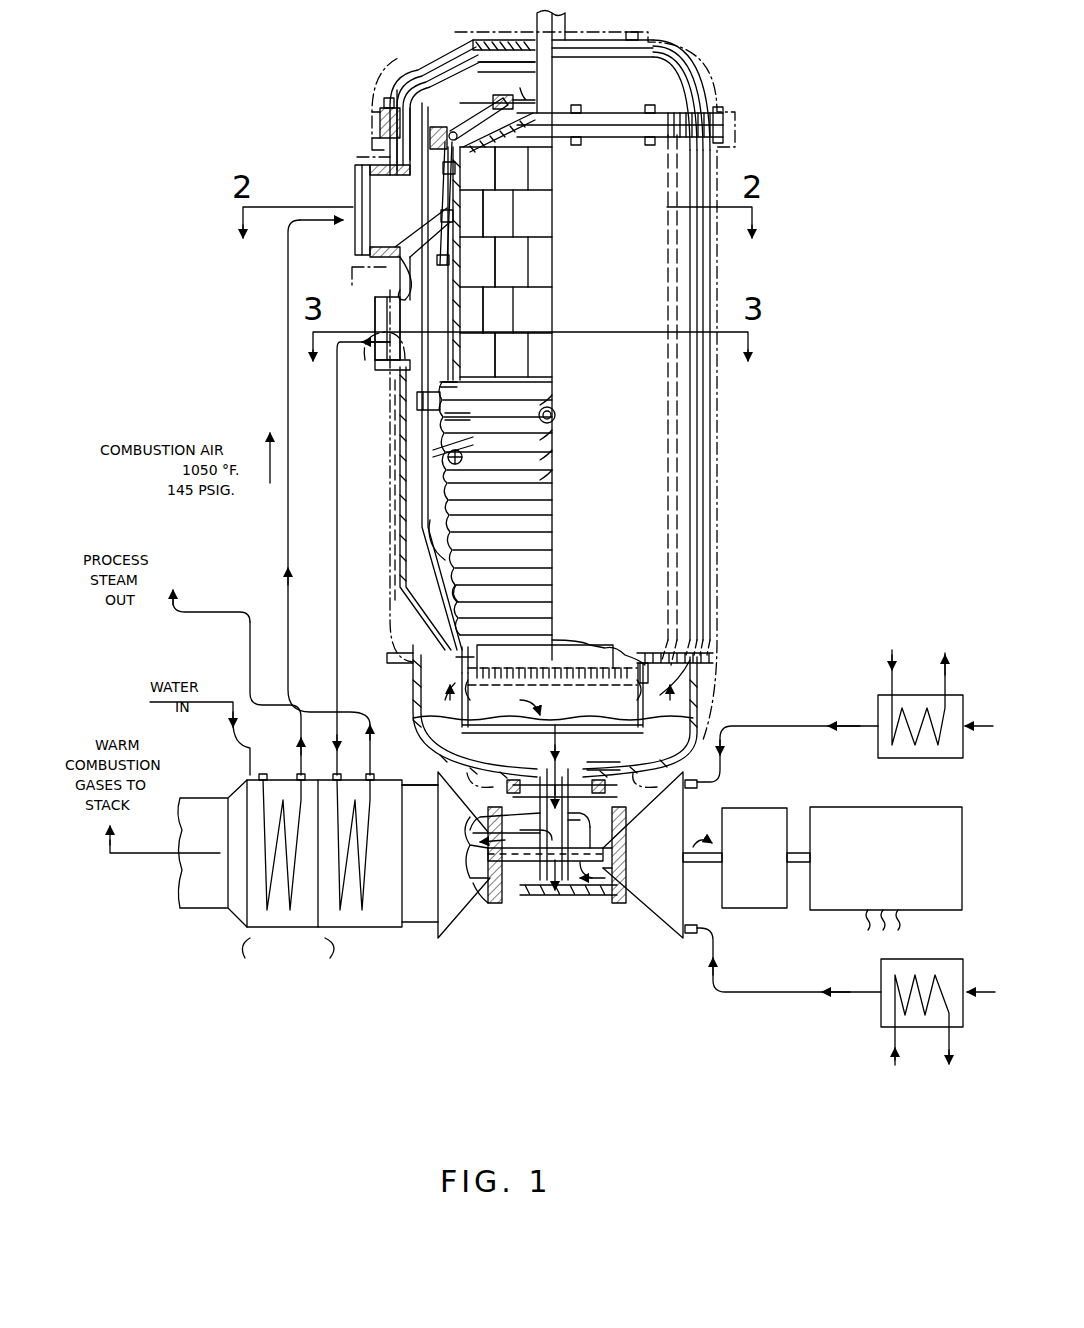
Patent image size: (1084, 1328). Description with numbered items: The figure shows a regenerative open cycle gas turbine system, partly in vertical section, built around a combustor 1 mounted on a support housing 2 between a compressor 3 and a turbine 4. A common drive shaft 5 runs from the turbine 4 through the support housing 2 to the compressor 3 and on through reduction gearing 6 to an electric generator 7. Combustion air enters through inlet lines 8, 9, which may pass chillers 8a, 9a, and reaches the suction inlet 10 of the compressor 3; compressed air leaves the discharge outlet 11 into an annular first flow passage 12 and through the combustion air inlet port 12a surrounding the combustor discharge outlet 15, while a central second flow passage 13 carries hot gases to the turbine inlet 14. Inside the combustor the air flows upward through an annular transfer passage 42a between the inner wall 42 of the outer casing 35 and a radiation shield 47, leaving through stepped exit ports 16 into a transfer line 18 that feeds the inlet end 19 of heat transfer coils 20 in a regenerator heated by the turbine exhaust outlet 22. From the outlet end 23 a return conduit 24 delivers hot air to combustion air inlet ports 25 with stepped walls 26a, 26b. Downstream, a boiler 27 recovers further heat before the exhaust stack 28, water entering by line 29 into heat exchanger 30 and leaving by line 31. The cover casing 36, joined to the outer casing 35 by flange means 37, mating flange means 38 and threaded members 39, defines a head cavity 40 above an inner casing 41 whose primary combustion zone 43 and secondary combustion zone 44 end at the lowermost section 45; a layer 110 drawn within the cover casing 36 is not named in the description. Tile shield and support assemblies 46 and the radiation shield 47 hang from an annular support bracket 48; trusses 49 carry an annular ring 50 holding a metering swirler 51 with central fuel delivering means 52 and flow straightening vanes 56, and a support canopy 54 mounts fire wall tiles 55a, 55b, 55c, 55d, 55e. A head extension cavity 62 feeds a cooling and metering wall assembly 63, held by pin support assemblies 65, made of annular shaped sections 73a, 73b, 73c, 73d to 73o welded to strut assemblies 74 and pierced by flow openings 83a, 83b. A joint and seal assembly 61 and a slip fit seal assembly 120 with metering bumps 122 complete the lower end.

The combustor 1 is at (668, 452).
The support housing 2 is at (567, 895).
The compressor 3 is at (660, 883).
The turbine 4 is at (440, 889).
The common drive shaft 5 is at (533, 858).
The reduction gearing 6 is at (760, 901).
The electric generator 7 is at (892, 898).
The inlet line 8 is at (770, 993).
The chiller 8a is at (925, 962).
The inlet line 9 is at (790, 725).
The chiller 9a is at (925, 750).
The suction inlet 10 is at (691, 788).
The discharge outlet 11 is at (635, 830).
The first flow passage 12 is at (530, 767).
The combustion air inlet port 12a is at (683, 685).
The second flow passage 13 is at (570, 765).
The turbine inlet 14 is at (505, 878).
The discharge outlet 15 is at (563, 665).
The combustion air exit ports 16 is at (380, 352).
The transfer line 18 is at (337, 398).
The inlet end 19 is at (333, 777).
The heat transfer coils 20 is at (362, 840).
The exhaust outlet 22 is at (410, 908).
The outlet end 23 is at (380, 772).
The return conduit 24 is at (288, 333).
The combustion air inlet ports 25 is at (375, 180).
The stepped wall 26a is at (370, 257).
The stepped wall 26b is at (362, 243).
The boiler 27 is at (325, 883).
The exhaust stack 28 is at (205, 897).
The line 29 is at (227, 735).
The heat exchanger 30 is at (267, 830).
The line 31 is at (245, 616).
The outer casing 35 is at (400, 470).
The cover casing 36 is at (415, 72).
The flange means 37 is at (378, 118).
The mating flange means 38 is at (380, 128).
The threaded members 39 is at (722, 113).
The head cavity 40 is at (492, 94).
The inner casing 41 is at (418, 403).
The inner wall 42 is at (403, 438).
The transfer passage 42a is at (447, 568).
The primary combustion zone 43 is at (510, 315).
The secondary combustion zone 44 is at (502, 520).
The lowermost section 45 is at (460, 660).
The tile shield and support assemblies 46 is at (445, 180).
The radiation shield 47 is at (425, 500).
The annular support bracket 48 is at (405, 270).
The trusses 49 is at (473, 118).
The annular ring 50 is at (522, 95).
The metering swirler 51 is at (533, 117).
The fuel delivering means 52 is at (548, 62).
The support canopy 54 is at (448, 238).
The fire wall tile 55a is at (518, 172).
The fire wall tile 55b is at (545, 220).
The fire wall tile 55c is at (518, 265).
The fire wall tile 55d is at (540, 310).
The fire wall tile 55e is at (518, 353).
The flow straightening vanes 56 is at (444, 135).
The joint and seal assembly 61 is at (470, 650).
The head extension cavity 62 is at (433, 450).
The cooling and metering wall assembly 63 is at (440, 540).
The pin support assemblies 65 is at (448, 385).
The annular shaped section 73a is at (530, 415).
The annular shaped section 73b is at (532, 428).
The annular shaped section 73c is at (537, 442).
The annular shaped section 73d is at (540, 457).
The annular shaped section 73o is at (565, 645).
The strut assemblies 74 is at (447, 417).
The flow opening 83a is at (462, 460).
The flow opening 83b is at (556, 415).
The insulation 110 is at (443, 72).
The slip fit seal assembly 120 is at (650, 672).
The bumps 122 is at (470, 695).